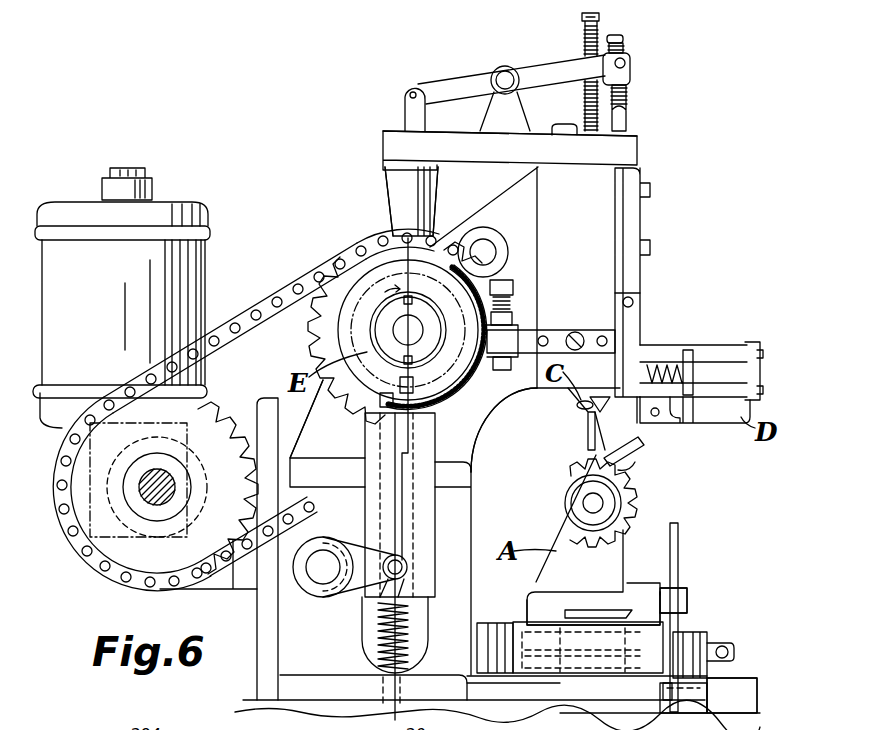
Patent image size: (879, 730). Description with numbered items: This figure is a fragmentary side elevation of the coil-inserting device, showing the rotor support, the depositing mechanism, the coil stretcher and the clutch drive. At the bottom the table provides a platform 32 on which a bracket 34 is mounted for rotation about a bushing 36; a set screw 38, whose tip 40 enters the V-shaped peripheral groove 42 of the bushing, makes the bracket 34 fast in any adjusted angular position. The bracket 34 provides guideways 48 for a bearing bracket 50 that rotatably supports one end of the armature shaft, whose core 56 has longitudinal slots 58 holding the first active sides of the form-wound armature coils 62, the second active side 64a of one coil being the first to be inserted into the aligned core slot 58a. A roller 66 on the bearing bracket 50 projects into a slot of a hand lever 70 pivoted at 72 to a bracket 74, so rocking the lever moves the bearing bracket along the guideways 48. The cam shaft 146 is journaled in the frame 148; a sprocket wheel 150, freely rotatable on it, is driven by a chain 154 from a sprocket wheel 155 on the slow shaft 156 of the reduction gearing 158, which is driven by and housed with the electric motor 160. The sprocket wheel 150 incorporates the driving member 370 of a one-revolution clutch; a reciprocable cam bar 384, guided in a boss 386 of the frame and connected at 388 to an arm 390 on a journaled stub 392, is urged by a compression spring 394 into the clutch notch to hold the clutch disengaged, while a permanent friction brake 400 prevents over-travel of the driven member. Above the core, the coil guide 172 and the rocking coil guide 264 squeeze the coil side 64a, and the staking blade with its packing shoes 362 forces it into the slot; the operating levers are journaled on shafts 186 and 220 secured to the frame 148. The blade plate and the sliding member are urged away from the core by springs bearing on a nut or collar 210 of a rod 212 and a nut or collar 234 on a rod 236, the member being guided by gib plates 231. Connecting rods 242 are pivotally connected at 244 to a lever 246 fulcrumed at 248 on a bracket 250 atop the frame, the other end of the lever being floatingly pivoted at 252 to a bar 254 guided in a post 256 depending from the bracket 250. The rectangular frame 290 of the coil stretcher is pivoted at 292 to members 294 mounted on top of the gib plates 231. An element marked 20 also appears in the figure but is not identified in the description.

The machine frame 20 is at (420, 219).
The platform 32 is at (748, 688).
The bracket 34 is at (490, 628).
The bushing 36 is at (557, 682).
The set screw 38 is at (725, 643).
The tip 40 is at (625, 655).
The V-shaped peripheral groove 42 is at (565, 648).
The guideways 48 is at (557, 613).
The bearing bracket 50 is at (548, 573).
The armature core 56 is at (640, 500).
The longitudinal slots 58 is at (551, 477).
The core slot 58a is at (610, 431).
The form-wound armature coils 62 is at (631, 462).
The second active coil side 64a is at (640, 447).
The roller 66 is at (680, 582).
The hand lever 70 is at (678, 545).
The pivot 72 is at (668, 688).
The bracket 74 is at (700, 710).
The cam shaft 146 is at (413, 325).
The frame 148 is at (521, 393).
The sprocket wheel 150 is at (315, 337).
The chain 154 is at (254, 312).
The sprocket wheel 155 is at (120, 556).
The slow shaft 156 is at (165, 498).
The reduction gearing 158 is at (150, 568).
The electric motor 160 is at (203, 219).
The coil guide 172 is at (585, 435).
The shaft 186 is at (480, 392).
The nut or collar 210 is at (602, 17).
The rod 212 is at (584, 30).
The shaft 220 is at (484, 250).
The gib plates 231 is at (617, 183).
The nut or collar 234 is at (626, 43).
The rod 236 is at (626, 53).
The connecting rods 242 is at (628, 118).
The pivot connection 244 is at (632, 71).
The lever 246 is at (446, 86).
The fulcrum 248 is at (507, 75).
The bracket 250 is at (478, 126).
The floating pivot 252 is at (427, 80).
The bar 254 is at (406, 114).
The post 256 is at (398, 186).
The coil guide 264 is at (617, 388).
The rectangular frame 290 is at (722, 348).
The pivot 292 is at (633, 302).
The members 294 is at (637, 278).
The packing shoes 362 is at (579, 405).
The driving clutch member 370 is at (373, 388).
The cam bar 384 is at (377, 500).
The boss 386 is at (425, 567).
The connection 388 is at (405, 565).
The arm 390 is at (352, 598).
The stub 392 is at (312, 570).
The compression spring 394 is at (378, 640).
The permanent friction brake 400 is at (488, 376).